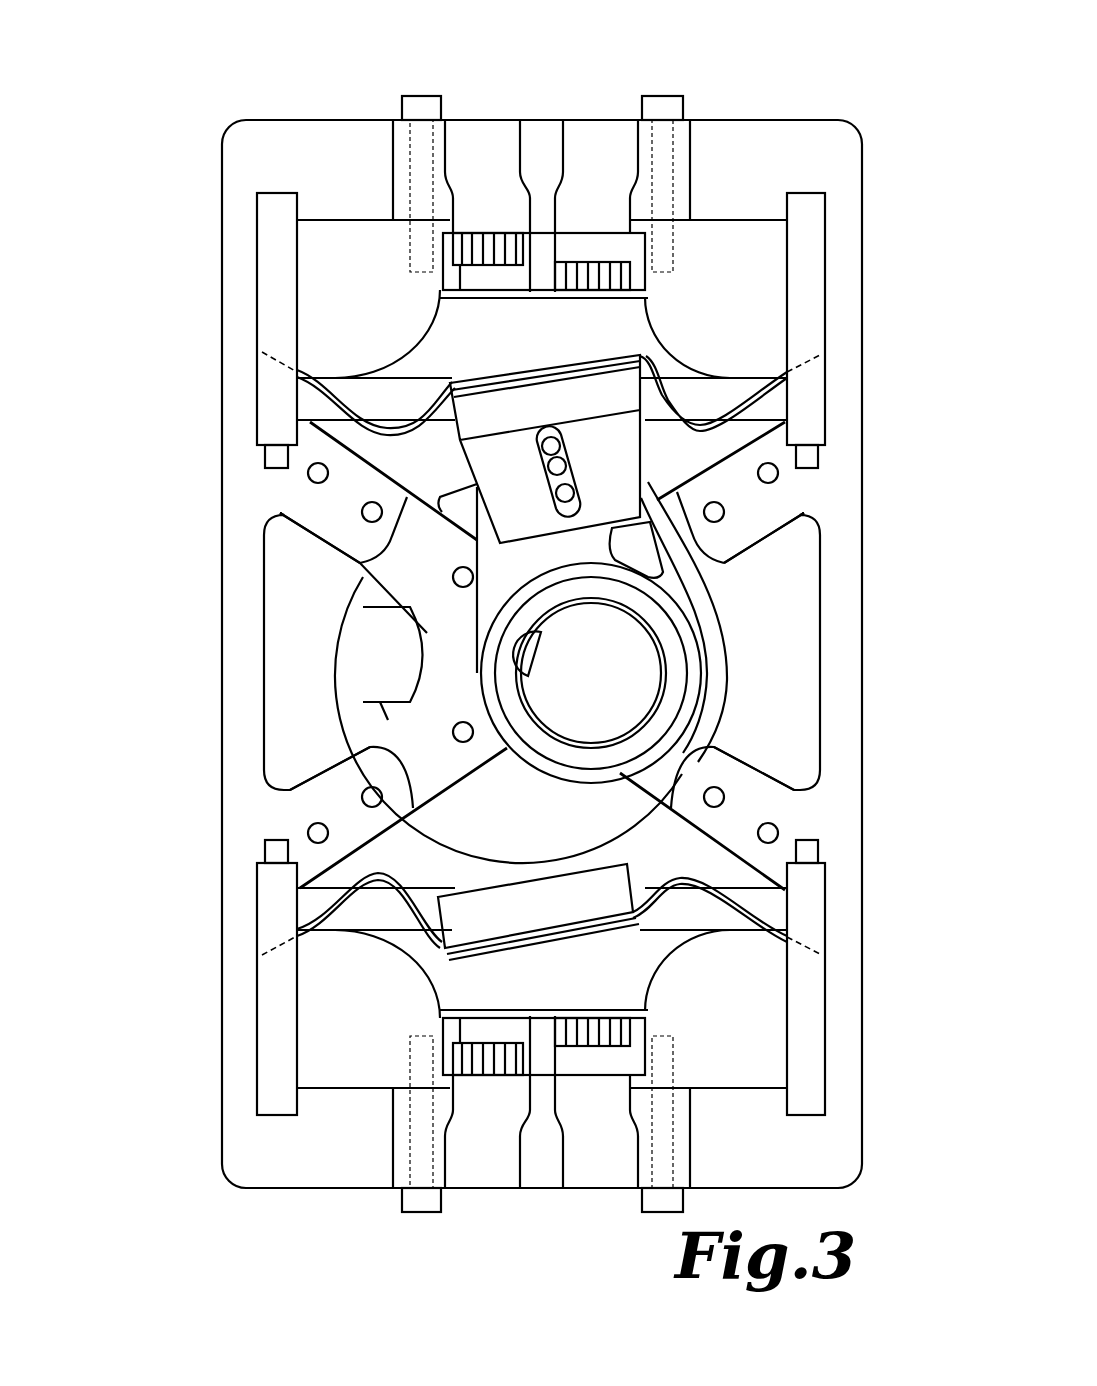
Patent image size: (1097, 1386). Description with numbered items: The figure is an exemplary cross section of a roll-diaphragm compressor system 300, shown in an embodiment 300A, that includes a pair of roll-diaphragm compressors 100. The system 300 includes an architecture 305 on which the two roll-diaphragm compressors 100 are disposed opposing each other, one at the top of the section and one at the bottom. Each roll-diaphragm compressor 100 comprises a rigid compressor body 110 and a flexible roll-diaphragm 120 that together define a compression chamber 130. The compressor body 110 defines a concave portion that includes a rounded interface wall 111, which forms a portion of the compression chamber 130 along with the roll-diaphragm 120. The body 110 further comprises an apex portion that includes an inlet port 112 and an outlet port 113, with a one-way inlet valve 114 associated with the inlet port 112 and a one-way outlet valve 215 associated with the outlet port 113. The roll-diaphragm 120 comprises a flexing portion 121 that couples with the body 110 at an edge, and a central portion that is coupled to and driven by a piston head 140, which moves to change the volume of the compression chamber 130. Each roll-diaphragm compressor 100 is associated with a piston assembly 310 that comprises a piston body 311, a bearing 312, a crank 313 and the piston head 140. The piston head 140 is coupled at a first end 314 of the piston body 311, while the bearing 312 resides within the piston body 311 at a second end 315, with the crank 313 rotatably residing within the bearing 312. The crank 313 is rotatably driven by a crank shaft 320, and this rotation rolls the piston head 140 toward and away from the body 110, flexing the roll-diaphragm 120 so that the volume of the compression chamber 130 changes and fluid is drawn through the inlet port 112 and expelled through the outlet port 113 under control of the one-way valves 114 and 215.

The roll-diaphragm compressor system 300 is at (213, 103).
The embodiment 300A is at (195, 153).
The roll-diaphragm compressor 100 is at (840, 163).
The compressor body 110 is at (255, 268).
The rounded interface wall 111 is at (430, 326).
The inlet port 112 is at (475, 100).
The outlet port 113 is at (613, 100).
The one-way inlet valve 114 is at (480, 228).
The one-way outlet valve 215 is at (600, 265).
The roll-diaphragm 120 is at (815, 447).
The flexing portion 121 is at (262, 360).
The compression chamber 130 is at (420, 400).
The piston head 140 is at (470, 505).
The architecture 305 is at (218, 652).
The piston assembly 310 is at (708, 605).
The piston body 311 is at (457, 628).
The bearing 312 is at (695, 675).
The crank 313 is at (582, 745).
The first end 314 is at (577, 487).
The second end 315 is at (608, 793).
The crank shaft 320 is at (517, 647).